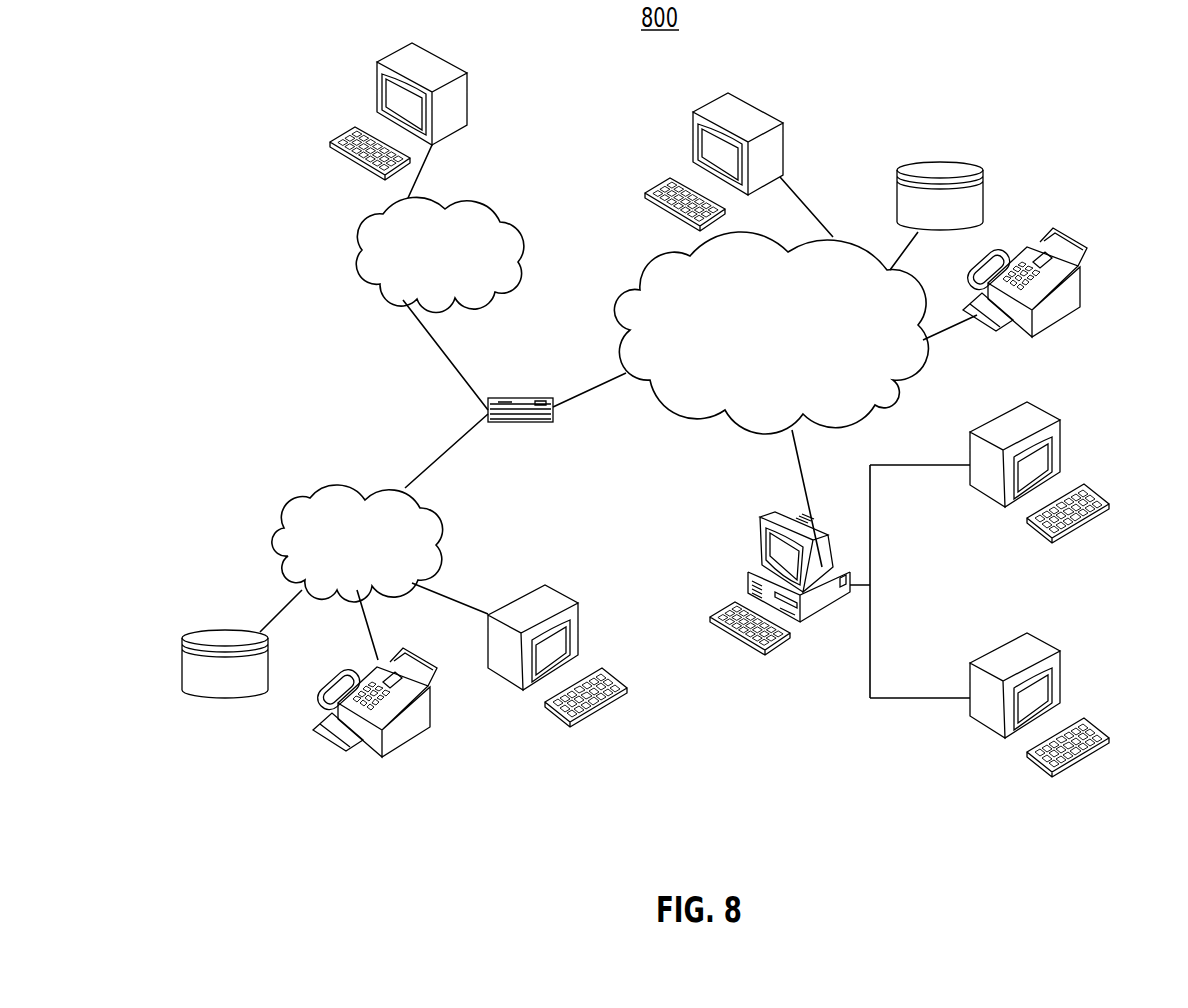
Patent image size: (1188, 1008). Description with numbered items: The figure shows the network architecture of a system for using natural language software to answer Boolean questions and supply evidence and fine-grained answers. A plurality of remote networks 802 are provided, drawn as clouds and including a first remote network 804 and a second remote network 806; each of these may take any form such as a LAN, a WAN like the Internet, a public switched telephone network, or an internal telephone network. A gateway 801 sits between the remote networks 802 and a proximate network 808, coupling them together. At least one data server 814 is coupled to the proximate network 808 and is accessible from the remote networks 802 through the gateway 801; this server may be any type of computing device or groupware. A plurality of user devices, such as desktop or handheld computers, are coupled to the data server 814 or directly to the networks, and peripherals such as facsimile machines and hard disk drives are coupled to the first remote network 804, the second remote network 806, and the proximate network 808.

The gateway 801 is at (520, 398).
The remote networks 802 is at (343, 330).
The first remote network 804 is at (283, 515).
The second remote network 806 is at (520, 259).
The proximate network 808 is at (893, 393).
The data server 814 is at (760, 542).